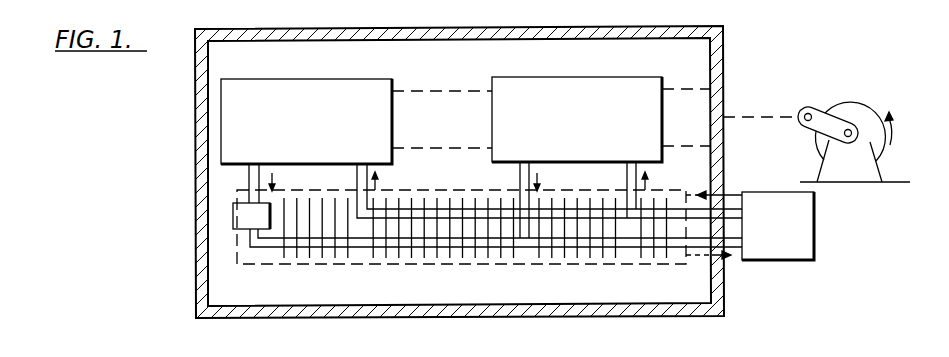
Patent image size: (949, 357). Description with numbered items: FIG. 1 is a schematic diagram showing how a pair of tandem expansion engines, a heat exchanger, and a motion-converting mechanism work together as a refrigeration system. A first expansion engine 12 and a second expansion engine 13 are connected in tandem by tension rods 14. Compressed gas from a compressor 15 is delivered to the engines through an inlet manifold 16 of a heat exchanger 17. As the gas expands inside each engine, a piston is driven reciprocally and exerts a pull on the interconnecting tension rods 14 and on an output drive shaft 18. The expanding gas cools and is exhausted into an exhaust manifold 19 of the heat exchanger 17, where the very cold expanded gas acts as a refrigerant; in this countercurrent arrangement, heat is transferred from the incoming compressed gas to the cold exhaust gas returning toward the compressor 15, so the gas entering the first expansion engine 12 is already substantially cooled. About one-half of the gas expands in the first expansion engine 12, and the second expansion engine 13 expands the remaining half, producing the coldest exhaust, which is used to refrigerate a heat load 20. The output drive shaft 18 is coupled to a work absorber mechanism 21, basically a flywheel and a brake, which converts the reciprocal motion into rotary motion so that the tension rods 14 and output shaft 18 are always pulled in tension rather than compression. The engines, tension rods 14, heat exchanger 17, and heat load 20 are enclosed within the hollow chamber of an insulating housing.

The expansion engine 12 is at (555, 85).
The expansion engine 13 is at (296, 91).
The tension rods 14 is at (420, 148).
The compressor 15 is at (814, 250).
The inlet manifold 16 is at (658, 200).
The heat exchanger 17 is at (590, 264).
The output drive shaft 18 is at (707, 82).
The exhaust manifold 19 is at (366, 250).
The heat load 20 is at (233, 227).
The work absorber mechanism 21 is at (872, 154).